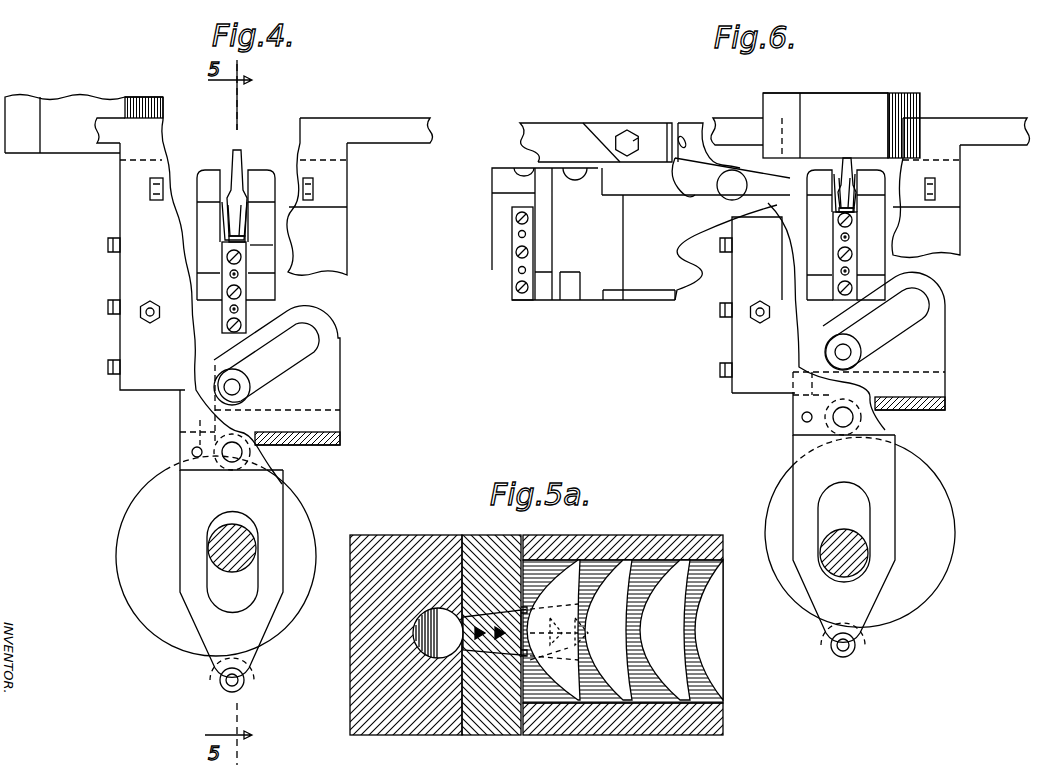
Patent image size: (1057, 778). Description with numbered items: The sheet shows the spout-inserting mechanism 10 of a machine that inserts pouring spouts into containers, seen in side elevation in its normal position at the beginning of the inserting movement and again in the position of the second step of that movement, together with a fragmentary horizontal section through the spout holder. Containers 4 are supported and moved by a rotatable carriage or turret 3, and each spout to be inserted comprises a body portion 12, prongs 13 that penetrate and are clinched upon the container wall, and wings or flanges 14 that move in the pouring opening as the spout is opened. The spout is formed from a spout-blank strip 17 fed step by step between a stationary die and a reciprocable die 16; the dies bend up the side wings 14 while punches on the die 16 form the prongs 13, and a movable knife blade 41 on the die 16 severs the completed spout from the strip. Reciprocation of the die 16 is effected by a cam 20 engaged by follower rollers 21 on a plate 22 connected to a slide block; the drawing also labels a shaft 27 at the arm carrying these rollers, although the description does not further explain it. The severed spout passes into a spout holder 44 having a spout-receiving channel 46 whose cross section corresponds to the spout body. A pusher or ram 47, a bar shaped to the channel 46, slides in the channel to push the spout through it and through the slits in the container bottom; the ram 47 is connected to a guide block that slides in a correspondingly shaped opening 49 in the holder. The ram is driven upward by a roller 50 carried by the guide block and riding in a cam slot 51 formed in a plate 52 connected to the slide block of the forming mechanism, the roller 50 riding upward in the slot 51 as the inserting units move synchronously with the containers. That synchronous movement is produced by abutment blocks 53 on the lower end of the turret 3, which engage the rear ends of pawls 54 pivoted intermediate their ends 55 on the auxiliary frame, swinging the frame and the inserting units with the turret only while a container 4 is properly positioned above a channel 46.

In FIG. 6, the carriage or turret 3 is at (558, 130).
In FIG. 6, the container 4 is at (825, 110).
In FIG. 4, the spout-inserting mechanism 10 is at (280, 298).
In FIG. 6, the spout-inserting mechanism 10 is at (490, 264).
In FIG. 4, the body portion 12 is at (226, 247).
In FIG. 6, the body portion 12 is at (838, 214).
In FIG. 5A, the body portion 12 is at (460, 633).
In FIG. 4, the prongs 13 is at (237, 172).
In FIG. 6, the prongs 13 is at (848, 166).
In FIG. 5A, the prongs 13 is at (498, 614).
In FIG. 4, the wings or flanges 14 is at (252, 222).
In FIG. 6, the wings or flanges 14 is at (858, 168).
In FIG. 5A, the reciprocable die 16 is at (558, 616).
In FIG. 5A, the spout-blank strip 17 is at (625, 630).
In FIG. 4, the cam 20 is at (296, 602).
In FIG. 6, the cam 20 is at (930, 487).
In FIG. 4, the follower rollers 21 is at (250, 456).
In FIG. 6, the follower rollers 21 is at (862, 418).
In FIG. 4, the plate 22 is at (196, 568).
In FIG. 6, the plate 22 is at (880, 528).
In FIG. 4, the shaft 27 is at (230, 528).
In FIG. 6, the shaft 27 is at (846, 532).
In FIG. 5A, the movable knife blade 41 is at (550, 658).
In FIG. 4, the spout holder 44 is at (258, 246).
In FIG. 5A, the spout holder 44 is at (494, 728).
In FIG. 5A, the spout-receiving channel 46 is at (477, 592).
In FIG. 4, the pusher or ram 47 is at (242, 293).
In FIG. 6, the pusher or ram 47 is at (517, 279).
In FIG. 5A, the opening 49 is at (437, 608).
In FIG. 4, the roller 50 is at (224, 389).
In FIG. 6, the roller 50 is at (832, 352).
In FIG. 4, the cam slot 51 is at (278, 370).
In FIG. 6, the cam slot 51 is at (906, 298).
In FIG. 4, the plate 52 is at (325, 398).
In FIG. 6, the plate 52 is at (935, 335).
In FIG. 6, the abutment blocks 53 is at (672, 130).
In FIG. 6, the pawls 54 is at (700, 178).
In FIG. 6, the pivot 55 is at (729, 188).